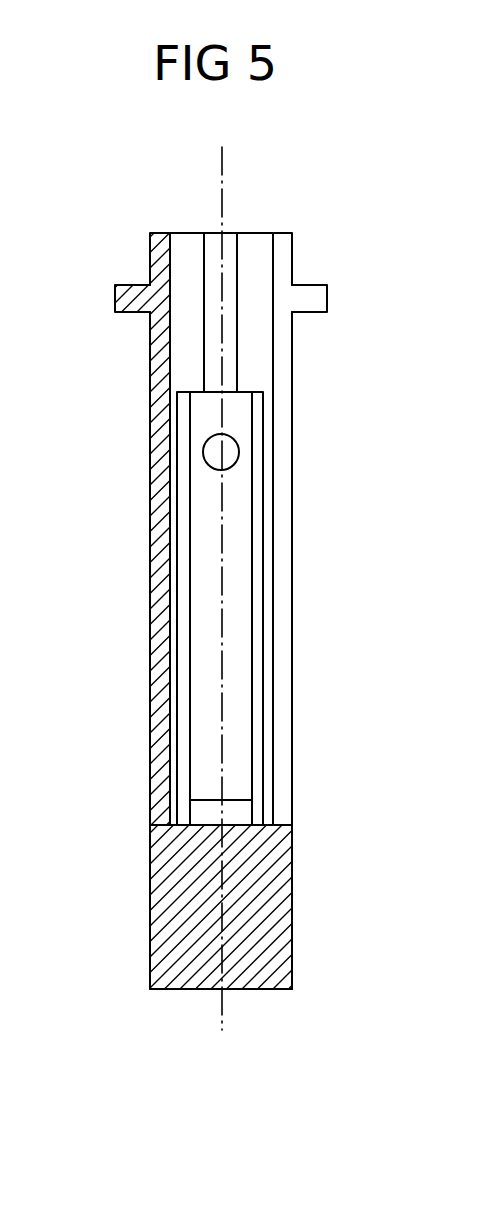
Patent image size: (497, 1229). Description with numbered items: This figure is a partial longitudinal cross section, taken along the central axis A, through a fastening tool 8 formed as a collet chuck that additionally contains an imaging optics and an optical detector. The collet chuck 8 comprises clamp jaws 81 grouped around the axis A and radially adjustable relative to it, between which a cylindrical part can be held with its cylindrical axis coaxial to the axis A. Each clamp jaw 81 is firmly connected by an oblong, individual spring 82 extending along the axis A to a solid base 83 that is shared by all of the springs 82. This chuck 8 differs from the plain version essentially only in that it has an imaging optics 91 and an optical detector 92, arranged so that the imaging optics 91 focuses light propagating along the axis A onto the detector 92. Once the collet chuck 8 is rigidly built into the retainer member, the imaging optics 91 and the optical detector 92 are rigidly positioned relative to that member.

The fastening tool 8 is at (310, 382).
The clamp jaws 81 is at (138, 287).
The spring 82 is at (282, 563).
The solid base 83 is at (258, 912).
The imaging optics 91 is at (227, 453).
The optical detector 92 is at (232, 810).
The axis A is at (222, 153).